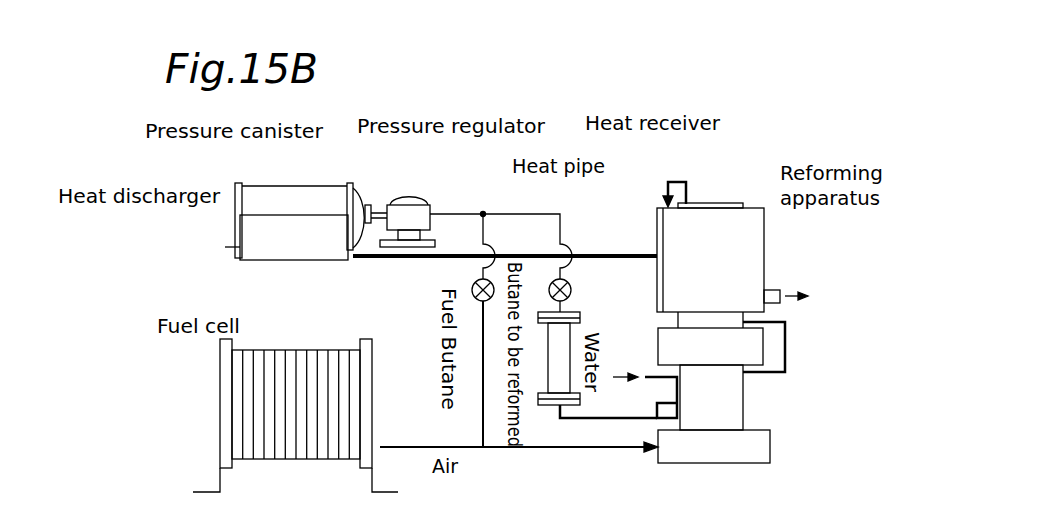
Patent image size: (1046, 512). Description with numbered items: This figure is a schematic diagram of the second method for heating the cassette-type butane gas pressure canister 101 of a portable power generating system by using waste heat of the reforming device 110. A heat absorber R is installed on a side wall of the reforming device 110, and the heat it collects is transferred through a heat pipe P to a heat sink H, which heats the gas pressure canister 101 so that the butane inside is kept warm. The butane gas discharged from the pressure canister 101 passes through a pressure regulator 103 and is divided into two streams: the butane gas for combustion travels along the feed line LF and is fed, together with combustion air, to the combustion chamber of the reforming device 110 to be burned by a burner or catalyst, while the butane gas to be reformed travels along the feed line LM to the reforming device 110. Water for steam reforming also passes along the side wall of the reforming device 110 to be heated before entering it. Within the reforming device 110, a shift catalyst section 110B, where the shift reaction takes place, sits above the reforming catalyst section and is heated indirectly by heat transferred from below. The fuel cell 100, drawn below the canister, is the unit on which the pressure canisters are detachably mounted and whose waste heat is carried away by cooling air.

The gas pressure canister 101 is at (267, 199).
The pressure regulator 103 is at (414, 198).
The heat sink H is at (247, 237).
The heat pipe P is at (588, 250).
The heat absorber R is at (657, 226).
The shift catalyst section 110B is at (726, 203).
The reforming device 110 is at (764, 224).
The fuel cell 100 is at (237, 371).
The feed line LF is at (558, 448).
The feed line LM is at (617, 419).